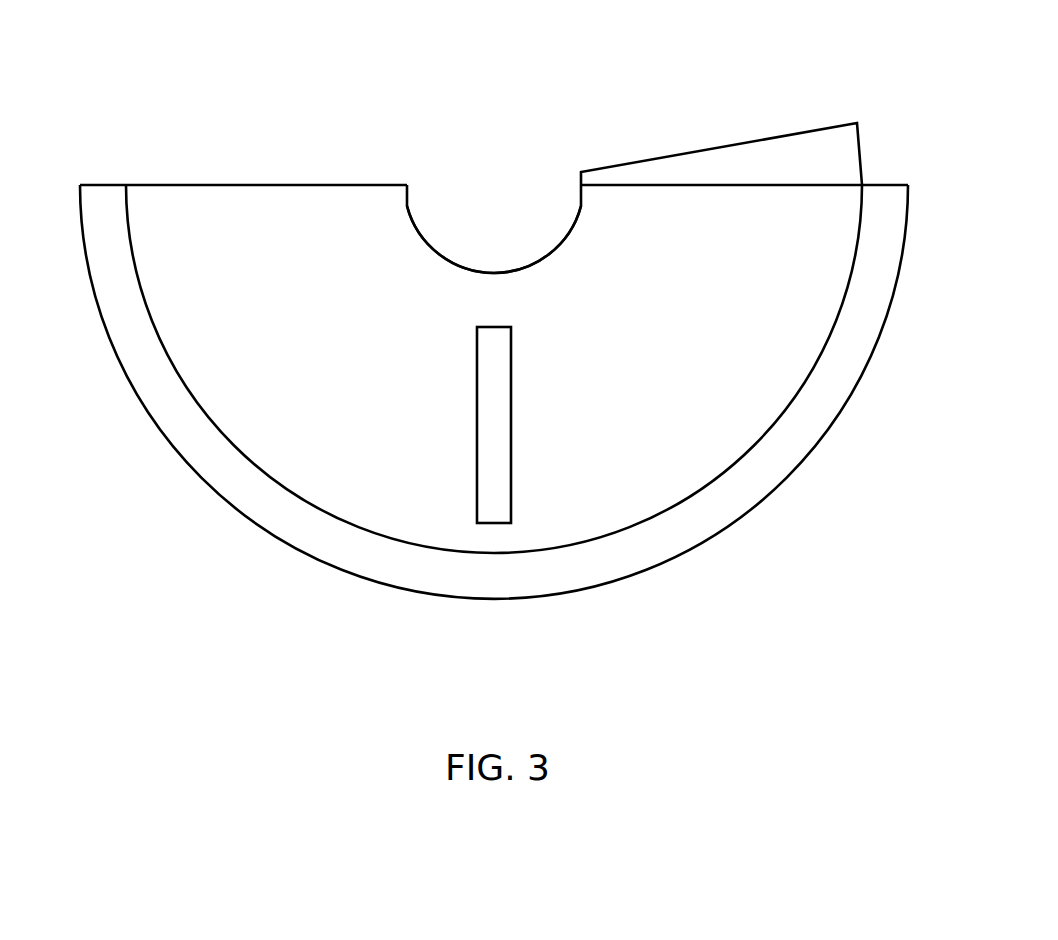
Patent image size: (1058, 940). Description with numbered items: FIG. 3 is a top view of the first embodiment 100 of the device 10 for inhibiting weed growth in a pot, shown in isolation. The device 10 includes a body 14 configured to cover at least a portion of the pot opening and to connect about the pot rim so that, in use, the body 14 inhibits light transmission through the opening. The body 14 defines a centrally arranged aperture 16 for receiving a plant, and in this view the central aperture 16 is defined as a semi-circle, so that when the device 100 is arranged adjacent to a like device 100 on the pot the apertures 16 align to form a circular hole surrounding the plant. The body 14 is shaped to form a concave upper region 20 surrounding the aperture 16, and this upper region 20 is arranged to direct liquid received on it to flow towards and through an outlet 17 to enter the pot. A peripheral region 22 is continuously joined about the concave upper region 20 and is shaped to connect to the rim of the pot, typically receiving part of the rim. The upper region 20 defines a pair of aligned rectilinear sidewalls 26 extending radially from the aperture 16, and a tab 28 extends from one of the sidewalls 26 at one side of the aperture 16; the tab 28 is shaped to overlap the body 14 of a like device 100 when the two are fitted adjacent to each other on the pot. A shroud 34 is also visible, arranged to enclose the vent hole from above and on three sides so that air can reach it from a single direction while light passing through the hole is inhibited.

The first embodiment of the device 100 is at (850, 82).
The device 10 is at (145, 138).
The body 14 is at (234, 203).
The central aperture 16 is at (505, 229).
The outlet 17 is at (417, 207).
The concave upper region 20 is at (315, 411).
The peripheral region 22 is at (337, 557).
The rectilinear sidewalls 26 is at (318, 185).
The tab 28 is at (793, 133).
The shroud 34 is at (498, 513).